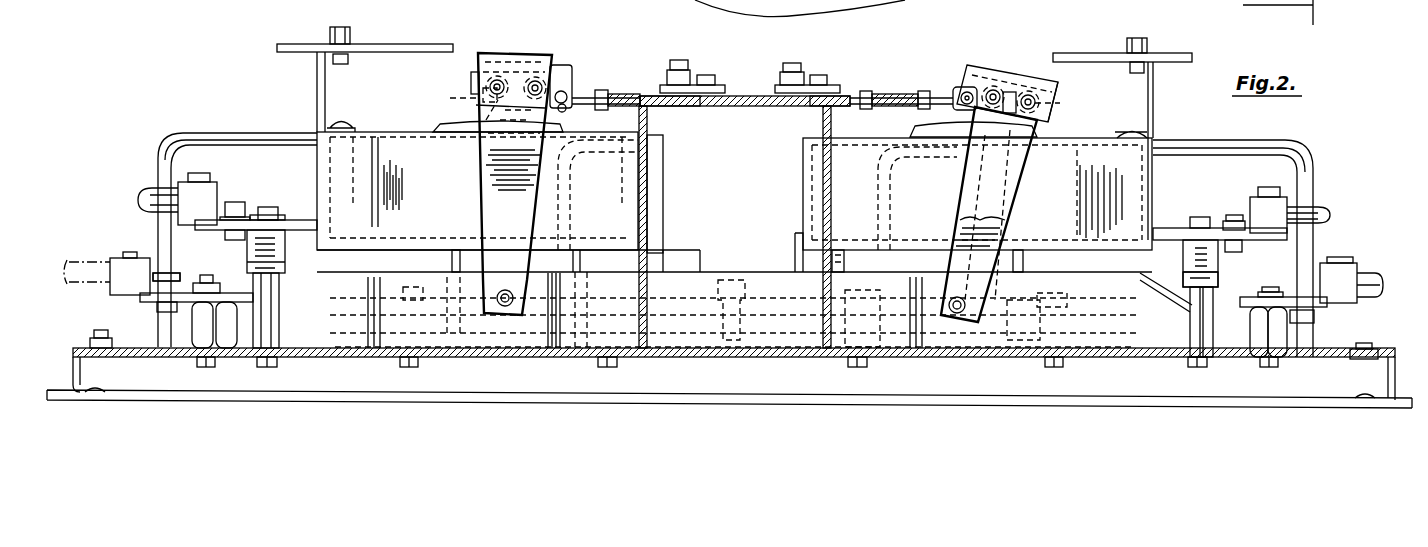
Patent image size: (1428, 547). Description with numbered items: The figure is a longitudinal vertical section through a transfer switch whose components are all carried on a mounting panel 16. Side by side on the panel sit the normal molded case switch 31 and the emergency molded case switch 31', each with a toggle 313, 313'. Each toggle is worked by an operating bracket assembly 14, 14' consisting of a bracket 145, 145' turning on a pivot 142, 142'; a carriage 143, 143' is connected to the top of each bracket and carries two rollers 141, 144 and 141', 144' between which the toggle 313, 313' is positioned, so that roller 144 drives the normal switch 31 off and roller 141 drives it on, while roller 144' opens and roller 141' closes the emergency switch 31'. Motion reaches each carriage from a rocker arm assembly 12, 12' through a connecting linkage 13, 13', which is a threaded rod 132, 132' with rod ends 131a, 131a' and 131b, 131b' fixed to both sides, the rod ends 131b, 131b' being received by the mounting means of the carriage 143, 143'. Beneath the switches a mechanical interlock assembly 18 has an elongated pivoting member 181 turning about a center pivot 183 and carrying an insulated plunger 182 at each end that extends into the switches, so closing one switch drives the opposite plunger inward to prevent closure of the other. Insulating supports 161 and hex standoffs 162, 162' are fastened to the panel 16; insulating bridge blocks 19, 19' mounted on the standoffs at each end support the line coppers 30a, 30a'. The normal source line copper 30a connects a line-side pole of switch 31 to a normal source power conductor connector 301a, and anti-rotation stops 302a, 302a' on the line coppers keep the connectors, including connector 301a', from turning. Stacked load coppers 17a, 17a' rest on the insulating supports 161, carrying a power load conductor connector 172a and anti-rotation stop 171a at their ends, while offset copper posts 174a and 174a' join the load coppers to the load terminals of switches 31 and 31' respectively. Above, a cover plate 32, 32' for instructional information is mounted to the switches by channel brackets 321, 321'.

The rocker arm assembly 12 is at (745, 74).
The rocker arm assembly 12' is at (691, 59).
The connecting linkage 13 is at (901, 66).
The connecting linkage 13' is at (606, 65).
The rod end 131a is at (823, 71).
The rod end 131a' is at (702, 118).
The rod end 131b is at (947, 77).
The rod end 131b' is at (544, 63).
The threaded rod 132 is at (886, 81).
The threaded rod 132' is at (605, 61).
The operating bracket assembly 14 is at (1004, 214).
The operating bracket assembly 14' is at (480, 184).
The roller 141 is at (993, 65).
The roller 141' is at (509, 55).
The pivot 142 is at (936, 270).
The pivot 142' is at (527, 205).
The carriage 143 is at (1078, 96).
The carriage 143' is at (438, 77).
The roller 144 is at (1067, 107).
The roller 144' is at (452, 97).
The bracket 145 is at (1007, 76).
The bracket 145' is at (487, 54).
The mounting panel 16 is at (458, 353).
The insulating support 161 is at (368, 360).
The hex standoff 162 is at (1221, 285).
The hex standoff 162' is at (201, 264).
The load copper 17a is at (1259, 316).
The support plate 17a' is at (194, 300).
The anti-rotation stop 171a is at (1263, 287).
The power load conductor connector 172a is at (1353, 263).
The copper post 174a is at (774, 241).
The copper post 174a' is at (653, 252).
The mechanical interlock assembly 18 is at (533, 360).
The elongated pivoting member 181 is at (657, 353).
The insulated plunger 182 is at (452, 258).
The center pivot 183 is at (747, 347).
The insulating bridge block 19 is at (1184, 298).
The insulating bridge block 19' is at (303, 289).
The normal source line copper 30a is at (1233, 248).
The line copper 30a' is at (235, 240).
The normal source power conductor connector 301a is at (1310, 206).
The pipe fitting 301a' is at (152, 193).
The anti-rotation stop 302a is at (1221, 208).
The anti-rotation stop 302a' is at (223, 198).
The normal molded case switch 31 is at (952, 194).
The emergency molded case switch 31' is at (703, 191).
The toggle 313 is at (989, 153).
The toggle 313' is at (485, 151).
The cover plate 32 is at (1122, 41).
The top plate 32' is at (365, 31).
The channel bracket 321 is at (1169, 151).
The channel bracket 321' is at (291, 92).